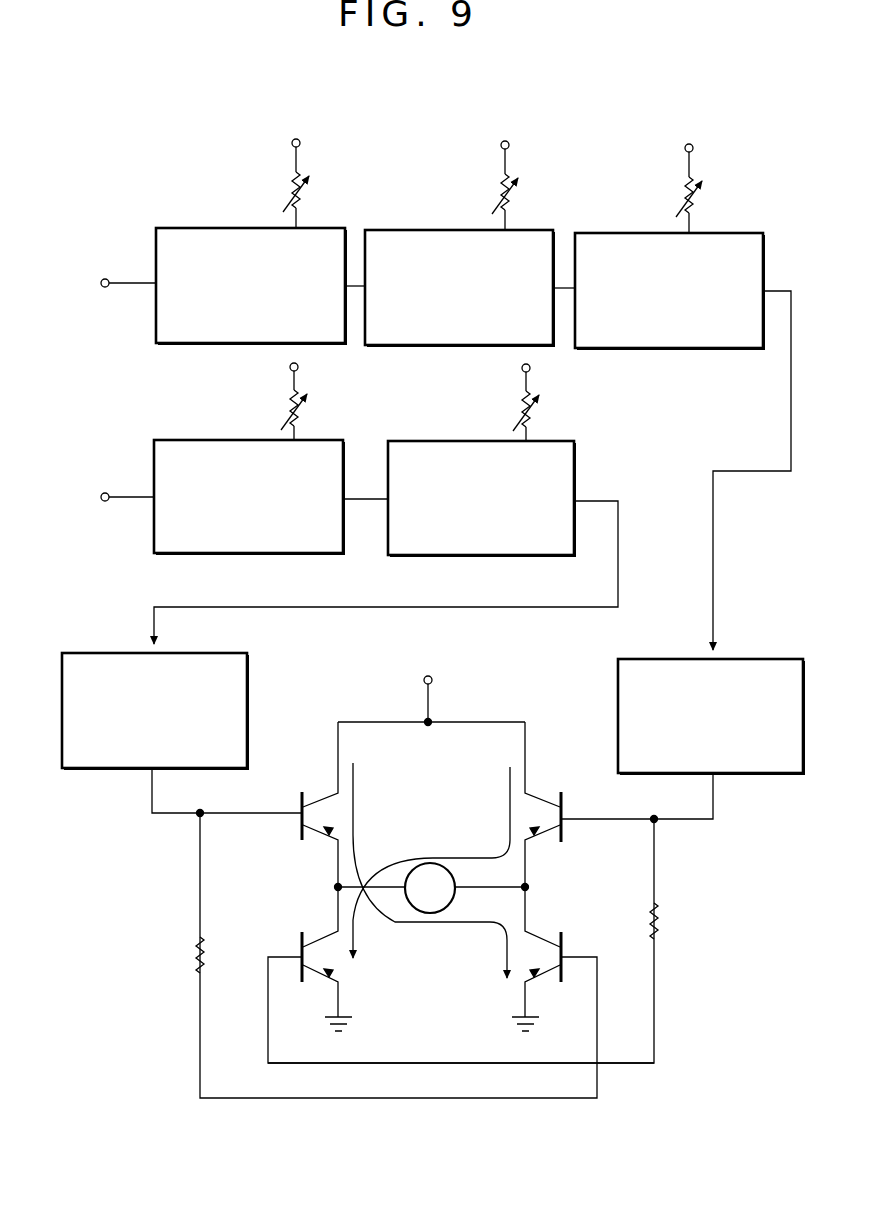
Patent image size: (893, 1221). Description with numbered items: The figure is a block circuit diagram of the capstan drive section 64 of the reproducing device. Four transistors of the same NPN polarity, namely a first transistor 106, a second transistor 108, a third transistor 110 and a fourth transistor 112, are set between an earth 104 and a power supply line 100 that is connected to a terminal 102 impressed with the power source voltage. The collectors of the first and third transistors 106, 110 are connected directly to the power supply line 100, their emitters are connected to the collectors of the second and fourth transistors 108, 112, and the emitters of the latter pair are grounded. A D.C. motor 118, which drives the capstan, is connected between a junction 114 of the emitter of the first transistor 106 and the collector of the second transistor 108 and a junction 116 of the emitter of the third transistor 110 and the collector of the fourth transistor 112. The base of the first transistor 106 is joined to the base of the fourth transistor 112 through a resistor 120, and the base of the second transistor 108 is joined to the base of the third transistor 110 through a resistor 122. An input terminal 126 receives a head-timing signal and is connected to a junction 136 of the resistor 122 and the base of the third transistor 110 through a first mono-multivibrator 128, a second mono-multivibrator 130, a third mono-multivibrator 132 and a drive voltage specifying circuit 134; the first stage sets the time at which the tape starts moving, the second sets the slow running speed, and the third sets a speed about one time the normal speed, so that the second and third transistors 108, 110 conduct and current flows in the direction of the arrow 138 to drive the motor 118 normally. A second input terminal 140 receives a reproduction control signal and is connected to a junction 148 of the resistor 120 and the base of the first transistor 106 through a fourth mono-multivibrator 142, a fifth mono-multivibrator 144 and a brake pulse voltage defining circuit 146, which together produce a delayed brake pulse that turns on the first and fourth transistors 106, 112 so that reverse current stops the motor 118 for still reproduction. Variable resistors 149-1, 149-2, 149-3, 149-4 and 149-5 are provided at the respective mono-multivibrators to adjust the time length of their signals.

The input terminal 126 is at (108, 279).
The first mono-multivibrator 128 is at (211, 227).
The second mono-multivibrator 130 is at (434, 229).
The third mono-multivibrator 132 is at (641, 233).
The variable resistor 149-1 is at (302, 196).
The variable resistor 149-2 is at (512, 198).
The variable resistor 149-3 is at (697, 200).
The variable resistor 149-4 is at (304, 407).
The variable resistor 149-5 is at (537, 407).
The input terminal 140 is at (108, 494).
The fourth mono-multivibrator 142 is at (219, 440).
The fifth mono-multivibrator 144 is at (450, 442).
The brake pulse voltage defining circuit 146 is at (114, 652).
The drive voltage specifying circuit 134 is at (776, 657).
The junction 148 is at (198, 816).
The junction 136 is at (656, 822).
The resistor 120 is at (190, 950).
The resistor 122 is at (659, 921).
The capstan drive section 64 is at (665, 1048).
The terminal 102 is at (427, 676).
The power supply line 100 is at (501, 722).
The first transistor 106 is at (322, 790).
The third transistor 110 is at (544, 790).
The second transistor 108 is at (318, 927).
The fourth transistor 112 is at (547, 938).
The junction 114 is at (337, 886).
The junction 116 is at (528, 889).
The D.C. motor 118 is at (422, 874).
The earth 104 is at (345, 1016).
The arrow 138 is at (475, 857).